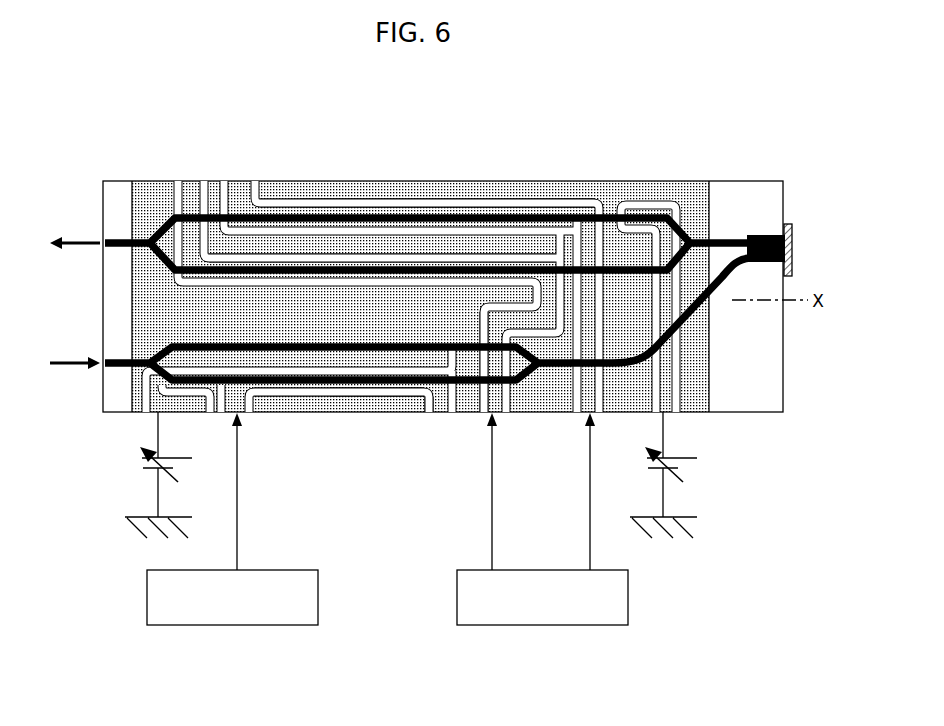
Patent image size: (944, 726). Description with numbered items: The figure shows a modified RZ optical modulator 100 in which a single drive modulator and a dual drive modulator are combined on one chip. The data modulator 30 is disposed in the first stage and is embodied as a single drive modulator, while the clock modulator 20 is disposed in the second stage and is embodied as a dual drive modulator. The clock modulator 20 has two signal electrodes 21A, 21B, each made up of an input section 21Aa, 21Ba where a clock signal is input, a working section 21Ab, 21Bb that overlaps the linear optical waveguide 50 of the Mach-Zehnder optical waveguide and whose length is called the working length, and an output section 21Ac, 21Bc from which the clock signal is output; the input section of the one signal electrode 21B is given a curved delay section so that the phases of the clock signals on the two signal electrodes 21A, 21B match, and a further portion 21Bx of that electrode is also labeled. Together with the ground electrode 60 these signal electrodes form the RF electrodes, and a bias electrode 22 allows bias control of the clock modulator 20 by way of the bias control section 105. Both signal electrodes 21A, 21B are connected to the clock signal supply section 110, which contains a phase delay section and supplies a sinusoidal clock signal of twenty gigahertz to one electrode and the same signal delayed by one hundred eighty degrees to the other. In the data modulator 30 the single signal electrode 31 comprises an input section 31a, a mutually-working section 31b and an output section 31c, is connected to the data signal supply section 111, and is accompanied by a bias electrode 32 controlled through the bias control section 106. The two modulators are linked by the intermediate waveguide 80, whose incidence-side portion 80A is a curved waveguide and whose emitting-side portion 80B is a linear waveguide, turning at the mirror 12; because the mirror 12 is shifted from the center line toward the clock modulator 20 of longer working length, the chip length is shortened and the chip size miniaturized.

The RZ optical modulator 100 is at (165, 150).
The mirror 12 is at (795, 239).
The clock modulator 20 is at (360, 196).
The signal electrode 21A is at (305, 205).
The input section 21Aa is at (578, 413).
The working section 21Ab is at (405, 205).
The output section 21Ac is at (243, 197).
The signal electrode 21B is at (182, 197).
The input section 21Ba is at (500, 413).
The working section 21Bb is at (462, 262).
The output section 21Bc is at (186, 192).
The ground electrode portion 21Bx is at (540, 392).
The bias electrode 22 is at (654, 205).
The data modulator 30 is at (345, 406).
The signal electrode 31 is at (318, 398).
The input section 31a is at (238, 413).
The mutually-working section 31b is at (390, 398).
The output section 31c is at (440, 413).
The bias electrode 32 is at (150, 392).
The optical waveguide 50 is at (155, 261).
The ground electrode 60 is at (592, 186).
The intermediate waveguide 80 is at (493, 262).
The incidence-side portion 80A is at (700, 310).
The emitting-side portion 80B is at (722, 240).
The bias control section 105 is at (684, 458).
The bias control section 106 is at (135, 457).
The clock signal supply section 110 is at (541, 626).
The data signal supply section 111 is at (232, 626).